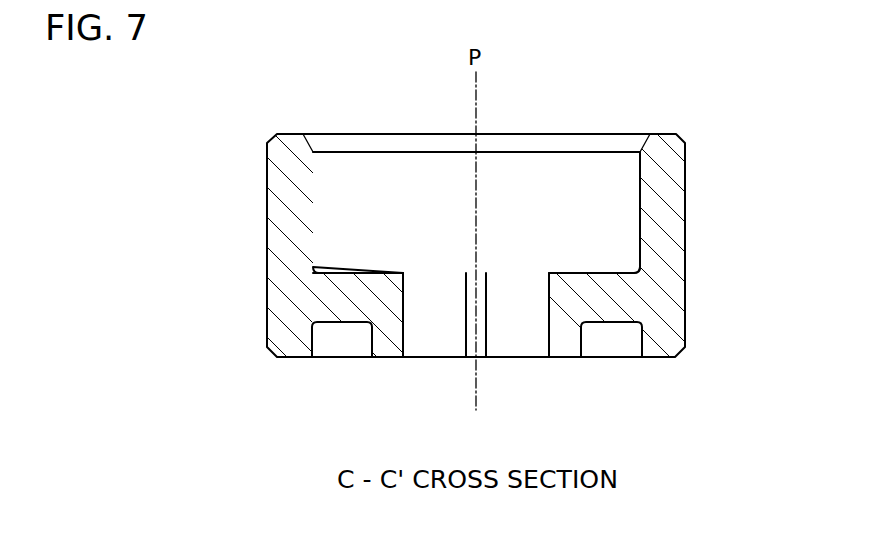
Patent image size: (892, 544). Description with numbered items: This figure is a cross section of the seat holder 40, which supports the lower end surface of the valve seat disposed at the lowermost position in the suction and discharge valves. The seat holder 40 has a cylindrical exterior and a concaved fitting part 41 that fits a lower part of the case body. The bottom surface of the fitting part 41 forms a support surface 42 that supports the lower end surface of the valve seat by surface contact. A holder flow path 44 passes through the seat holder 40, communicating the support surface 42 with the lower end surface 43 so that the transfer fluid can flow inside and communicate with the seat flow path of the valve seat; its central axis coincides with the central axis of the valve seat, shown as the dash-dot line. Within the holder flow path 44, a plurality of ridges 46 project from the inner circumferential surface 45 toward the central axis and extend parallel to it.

The seat holder 40 is at (722, 170).
The fitting part 41 is at (584, 184).
The support surface 42 is at (604, 272).
The lower end surface 43 is at (570, 357).
The holder flow path 44 is at (437, 328).
The inner circumferential surface 45 is at (404, 312).
The ridges 46 is at (482, 302).